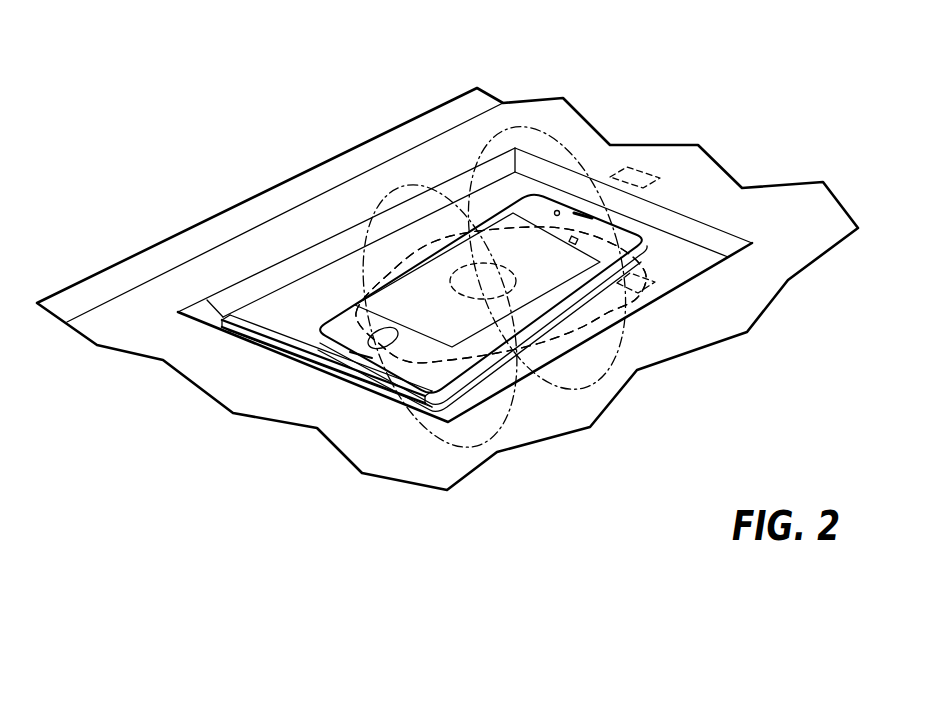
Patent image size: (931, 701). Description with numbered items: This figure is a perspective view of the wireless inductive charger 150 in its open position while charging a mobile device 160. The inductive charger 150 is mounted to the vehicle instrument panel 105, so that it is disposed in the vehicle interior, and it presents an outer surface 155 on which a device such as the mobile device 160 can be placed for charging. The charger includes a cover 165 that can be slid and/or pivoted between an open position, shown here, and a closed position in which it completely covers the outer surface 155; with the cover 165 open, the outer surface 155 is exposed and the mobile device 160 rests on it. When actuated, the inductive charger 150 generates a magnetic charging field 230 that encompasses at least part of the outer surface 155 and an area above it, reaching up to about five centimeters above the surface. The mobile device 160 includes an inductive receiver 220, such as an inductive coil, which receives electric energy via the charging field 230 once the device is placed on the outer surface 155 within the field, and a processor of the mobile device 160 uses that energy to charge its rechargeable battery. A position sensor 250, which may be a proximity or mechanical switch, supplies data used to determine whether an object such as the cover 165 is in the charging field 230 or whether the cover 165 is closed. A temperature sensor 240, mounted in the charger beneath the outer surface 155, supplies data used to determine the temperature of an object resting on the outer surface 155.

The instrument panel 105 is at (203, 278).
The wireless inductive charger 150 is at (521, 343).
The outer surface 155 is at (672, 273).
The mobile device 160 is at (545, 213).
The cover 165 is at (440, 400).
The inductive receiver 220 is at (368, 268).
The magnetic charging field 230 is at (482, 128).
The temperature sensor 240 is at (650, 290).
The position sensor 250 is at (637, 170).